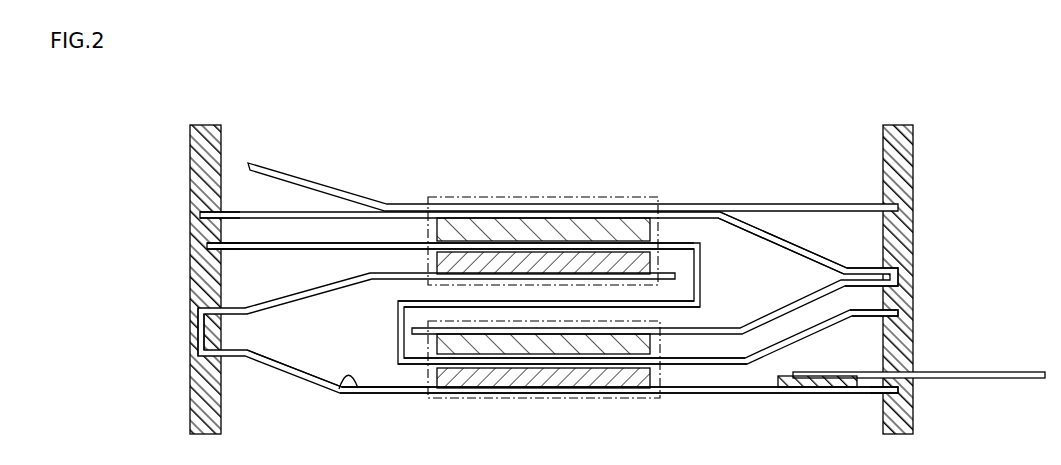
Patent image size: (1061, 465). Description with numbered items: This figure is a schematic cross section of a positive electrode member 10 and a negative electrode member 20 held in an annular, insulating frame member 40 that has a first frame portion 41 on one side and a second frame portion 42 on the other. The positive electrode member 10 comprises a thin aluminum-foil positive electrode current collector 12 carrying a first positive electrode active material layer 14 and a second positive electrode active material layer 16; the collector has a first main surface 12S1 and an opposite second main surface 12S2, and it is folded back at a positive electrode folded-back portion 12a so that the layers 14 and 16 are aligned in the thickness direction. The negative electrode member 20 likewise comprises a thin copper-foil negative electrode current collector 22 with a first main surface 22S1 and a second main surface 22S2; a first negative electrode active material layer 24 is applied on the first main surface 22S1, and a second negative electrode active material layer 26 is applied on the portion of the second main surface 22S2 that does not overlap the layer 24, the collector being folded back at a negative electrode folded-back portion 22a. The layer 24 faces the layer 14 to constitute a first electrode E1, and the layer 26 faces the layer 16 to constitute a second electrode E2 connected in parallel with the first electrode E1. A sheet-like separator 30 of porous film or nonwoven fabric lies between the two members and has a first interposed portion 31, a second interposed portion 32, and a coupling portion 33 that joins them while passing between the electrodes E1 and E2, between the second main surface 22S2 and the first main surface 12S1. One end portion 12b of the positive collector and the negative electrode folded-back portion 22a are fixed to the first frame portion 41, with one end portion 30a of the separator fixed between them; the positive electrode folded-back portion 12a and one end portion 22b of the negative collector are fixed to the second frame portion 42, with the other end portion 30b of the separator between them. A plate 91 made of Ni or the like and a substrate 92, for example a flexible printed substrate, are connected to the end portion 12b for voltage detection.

The positive electrode member 10 is at (281, 371).
The positive electrode current collector 12 is at (736, 393).
The positive electrode folded-back portion 12a is at (200, 333).
The one end portion of positive electrode current collector 12b is at (871, 393).
The first main surface 12S1 is at (339, 393).
The second main surface 12S2 is at (407, 393).
The first positive electrode active material layer 14 is at (607, 380).
The second positive electrode active material layer 16 is at (490, 263).
The negative electrode member 20 is at (287, 207).
The negative electrode current collector 22 is at (683, 212).
The negative electrode folded-back portion 22a is at (898, 272).
The one end portion of negative electrode current collector 22b is at (237, 212).
The first main surface 22S1 is at (745, 229).
The second main surface 22S2 is at (783, 246).
The first negative electrode active material layer 24 is at (552, 347).
The second negative electrode active material layer 26 is at (522, 224).
The separator 30 is at (803, 338).
The one end portion of separator 30a is at (867, 314).
The other end portion of separator 30b is at (238, 250).
The first interposed portion 31 is at (492, 364).
The second interposed portion 32 is at (574, 243).
The coupling portion 33 is at (417, 301).
The frame member 40 is at (563, 259).
The first frame portion 41 is at (897, 125).
The second frame portion 42 is at (213, 125).
The plate 91 is at (803, 388).
The substrate 92 is at (1000, 379).
The first electrode E1 is at (453, 399).
The second electrode E2 is at (613, 197).